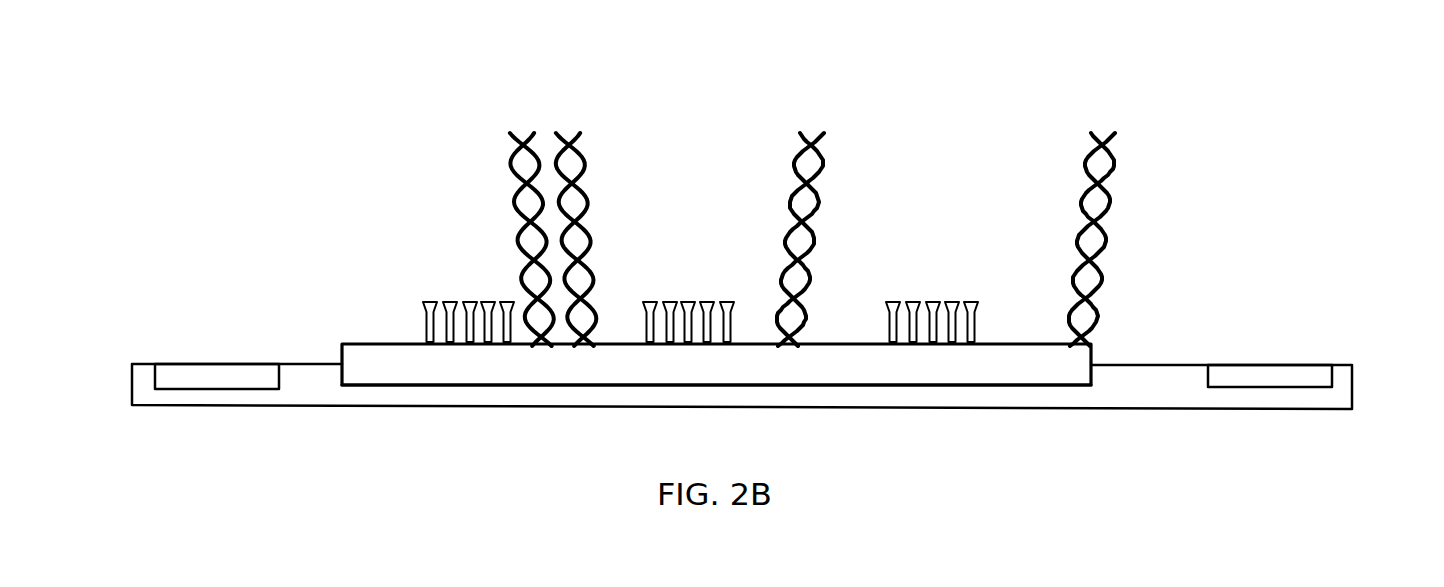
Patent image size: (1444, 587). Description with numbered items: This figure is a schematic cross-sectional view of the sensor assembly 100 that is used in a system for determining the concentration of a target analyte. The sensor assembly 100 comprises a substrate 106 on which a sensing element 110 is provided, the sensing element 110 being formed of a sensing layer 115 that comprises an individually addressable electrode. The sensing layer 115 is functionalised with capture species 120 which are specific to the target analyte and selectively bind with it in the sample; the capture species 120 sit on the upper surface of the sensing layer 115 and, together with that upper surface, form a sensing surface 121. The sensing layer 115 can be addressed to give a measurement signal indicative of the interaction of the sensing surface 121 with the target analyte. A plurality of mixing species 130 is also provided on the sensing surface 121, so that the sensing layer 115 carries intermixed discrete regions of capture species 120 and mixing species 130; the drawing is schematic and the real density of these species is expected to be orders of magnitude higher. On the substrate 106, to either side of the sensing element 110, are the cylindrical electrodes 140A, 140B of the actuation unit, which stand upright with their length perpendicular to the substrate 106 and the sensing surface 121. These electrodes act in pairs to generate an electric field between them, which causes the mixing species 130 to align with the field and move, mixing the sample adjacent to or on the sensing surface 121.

The sensor assembly 100 is at (243, 77).
The substrate 106 is at (392, 400).
The sensing element 110 is at (790, 382).
The sensing layer 115 is at (456, 373).
The capture species 120 is at (425, 323).
The sensing surface 121 is at (718, 132).
The mixing species 130 is at (582, 192).
The cylindrical electrode 140A is at (163, 377).
The cylindrical electrode 140B is at (1312, 382).